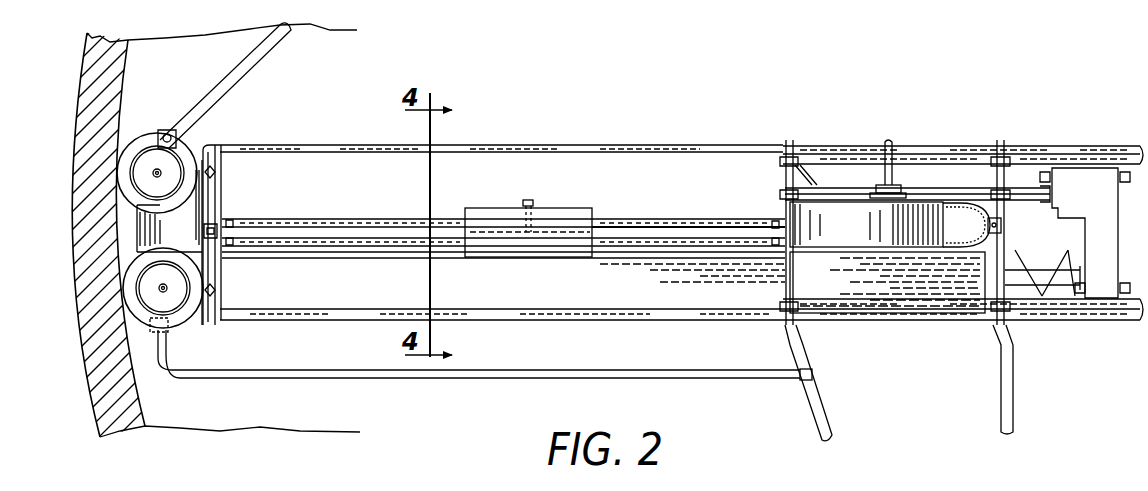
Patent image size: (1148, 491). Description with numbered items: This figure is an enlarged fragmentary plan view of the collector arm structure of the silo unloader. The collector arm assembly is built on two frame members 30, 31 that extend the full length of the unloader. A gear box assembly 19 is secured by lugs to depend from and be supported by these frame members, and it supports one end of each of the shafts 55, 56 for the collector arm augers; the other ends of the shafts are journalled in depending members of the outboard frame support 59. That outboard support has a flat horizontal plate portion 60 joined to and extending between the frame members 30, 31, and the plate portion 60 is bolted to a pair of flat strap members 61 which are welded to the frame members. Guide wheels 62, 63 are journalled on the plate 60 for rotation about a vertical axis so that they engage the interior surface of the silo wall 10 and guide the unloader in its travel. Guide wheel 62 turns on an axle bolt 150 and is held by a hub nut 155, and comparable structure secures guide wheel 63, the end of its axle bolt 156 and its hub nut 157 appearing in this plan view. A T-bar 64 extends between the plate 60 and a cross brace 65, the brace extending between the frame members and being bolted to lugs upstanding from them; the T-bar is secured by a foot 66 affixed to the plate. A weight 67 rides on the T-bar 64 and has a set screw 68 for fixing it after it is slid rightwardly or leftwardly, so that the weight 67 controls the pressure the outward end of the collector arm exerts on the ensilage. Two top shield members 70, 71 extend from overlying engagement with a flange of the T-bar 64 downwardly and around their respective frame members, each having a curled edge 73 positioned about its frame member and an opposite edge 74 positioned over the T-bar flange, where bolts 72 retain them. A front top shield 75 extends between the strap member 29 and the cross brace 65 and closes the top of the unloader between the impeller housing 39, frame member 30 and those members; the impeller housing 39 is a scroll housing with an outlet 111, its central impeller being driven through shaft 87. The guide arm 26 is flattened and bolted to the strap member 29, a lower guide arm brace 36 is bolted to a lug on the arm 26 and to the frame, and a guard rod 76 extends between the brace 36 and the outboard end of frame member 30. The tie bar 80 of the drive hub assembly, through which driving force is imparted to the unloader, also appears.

The silo wall 10 is at (78, 84).
The tie bar 80 is at (248, 64).
The guide wheel 63 is at (190, 140).
The flat strap members 61 is at (215, 158).
The axle bolt 156 is at (160, 164).
The hub nut 157 is at (153, 176).
The axle bolt 150 is at (166, 279).
The hub nut 155 is at (158, 291).
The outboard frame support 59 is at (136, 237).
The flat horizontal plate portion 60 is at (180, 241).
The foot 66 is at (214, 224).
The bolts 72 is at (233, 221).
The top shield member 70 is at (327, 186).
The top shield member 71 is at (344, 293).
The opposite edge 74 is at (374, 223).
The curled edge 73 is at (655, 145).
The set screw 68 is at (529, 200).
The weight 67 is at (583, 208).
The T-bar 64 is at (705, 225).
The cross brace 65 is at (780, 160).
The shaft 87 is at (889, 162).
The strap member 29 is at (1005, 160).
The frame member 31 is at (1117, 148).
The frame member 30 is at (1125, 320).
The gear box assembly 19 is at (1106, 192).
The shaft 55 is at (1022, 198).
The outlet 111 is at (1001, 236).
The shaft 56 is at (1056, 268).
The impeller housing 39 is at (864, 229).
The front top shield 75 is at (852, 288).
The lower guide arm brace 36 is at (820, 406).
The arm 26 is at (1005, 406).
The guard rod 76 is at (498, 380).
The guide wheel 62 is at (176, 328).